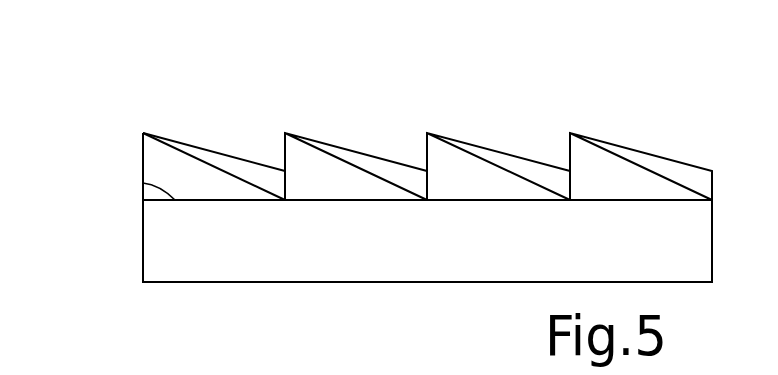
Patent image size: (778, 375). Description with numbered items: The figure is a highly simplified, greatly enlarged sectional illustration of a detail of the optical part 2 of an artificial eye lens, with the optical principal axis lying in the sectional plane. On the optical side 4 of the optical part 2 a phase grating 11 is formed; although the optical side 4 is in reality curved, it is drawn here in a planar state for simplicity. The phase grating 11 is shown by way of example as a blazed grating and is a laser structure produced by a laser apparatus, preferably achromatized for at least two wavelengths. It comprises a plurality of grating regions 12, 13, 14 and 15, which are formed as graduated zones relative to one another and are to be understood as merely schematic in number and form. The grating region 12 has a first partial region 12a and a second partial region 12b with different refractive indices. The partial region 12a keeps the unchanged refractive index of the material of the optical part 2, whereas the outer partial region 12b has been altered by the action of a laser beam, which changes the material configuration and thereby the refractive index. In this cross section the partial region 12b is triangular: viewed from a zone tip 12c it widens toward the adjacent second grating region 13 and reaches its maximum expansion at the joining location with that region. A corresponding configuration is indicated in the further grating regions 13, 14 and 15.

The optical part 2 is at (116, 231).
The optical side 4 is at (143, 183).
The phase grating 11 is at (393, 105).
The grating region 12 is at (192, 122).
The first partial region 12a is at (182, 162).
The second partial region 12b is at (252, 170).
The zone tip 12c is at (143, 133).
The second grating region 13 is at (364, 125).
The grating region 14 is at (512, 125).
The grating region 15 is at (662, 125).